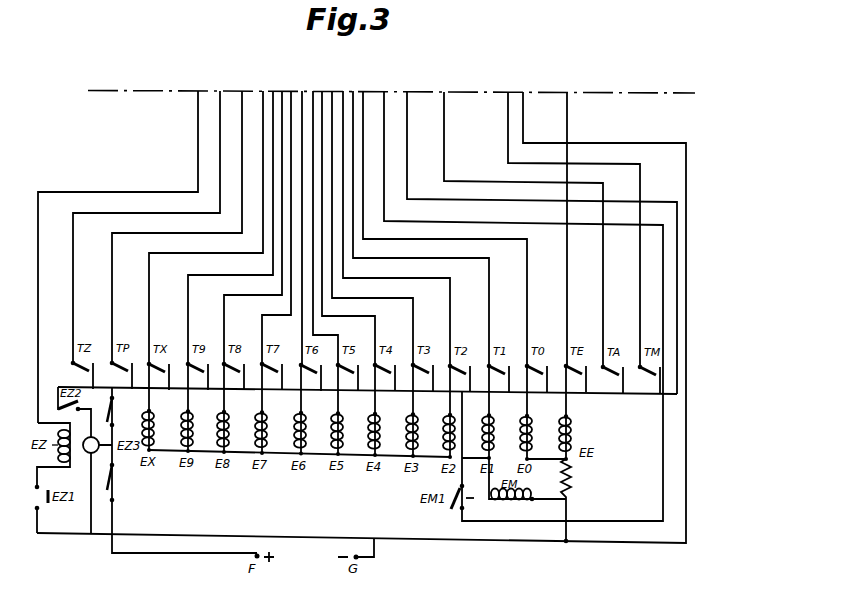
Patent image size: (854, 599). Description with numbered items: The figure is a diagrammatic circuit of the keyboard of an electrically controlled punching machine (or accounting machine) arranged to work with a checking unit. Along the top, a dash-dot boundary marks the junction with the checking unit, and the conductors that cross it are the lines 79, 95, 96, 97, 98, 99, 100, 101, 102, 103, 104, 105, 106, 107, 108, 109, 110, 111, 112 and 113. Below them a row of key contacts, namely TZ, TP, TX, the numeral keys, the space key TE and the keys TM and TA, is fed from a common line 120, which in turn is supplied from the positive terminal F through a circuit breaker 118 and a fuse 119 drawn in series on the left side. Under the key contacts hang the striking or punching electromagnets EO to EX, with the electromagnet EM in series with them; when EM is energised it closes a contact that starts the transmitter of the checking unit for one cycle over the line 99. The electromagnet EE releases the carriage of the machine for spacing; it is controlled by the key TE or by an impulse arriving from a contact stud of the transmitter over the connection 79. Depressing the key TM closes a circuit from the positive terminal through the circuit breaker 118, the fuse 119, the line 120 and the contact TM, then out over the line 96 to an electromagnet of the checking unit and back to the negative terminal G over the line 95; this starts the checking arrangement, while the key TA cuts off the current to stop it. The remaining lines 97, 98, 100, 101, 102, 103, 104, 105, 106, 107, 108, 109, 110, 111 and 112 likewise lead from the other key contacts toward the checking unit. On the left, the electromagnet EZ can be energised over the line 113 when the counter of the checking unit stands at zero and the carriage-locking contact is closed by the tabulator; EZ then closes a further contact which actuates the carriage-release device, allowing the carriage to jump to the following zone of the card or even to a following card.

The connection 79 is at (568, 217).
The line 95 is at (361, 306).
The line 96 is at (570, 218).
The conductor 97 is at (520, 218).
The conductor 98 is at (538, 231).
The line 99 is at (520, 295).
The conductor 100 is at (441, 214).
The conductor 101 is at (417, 214).
The conductor 102 is at (393, 214).
The conductor 103 is at (369, 213).
The conductor 104 is at (345, 213).
The conductor 105 is at (322, 213).
The conductor 106 is at (305, 213).
The conductor 107 is at (283, 213).
The conductor 108 is at (259, 213).
The conductor 109 is at (237, 213).
The conductor 110 is at (212, 213).
The conductor 111 is at (183, 212).
The conductor 112 is at (153, 212).
The line 113 is at (124, 242).
The circuit breaker 118 is at (114, 488).
The fuse 119 is at (114, 417).
The line 120 is at (628, 397).